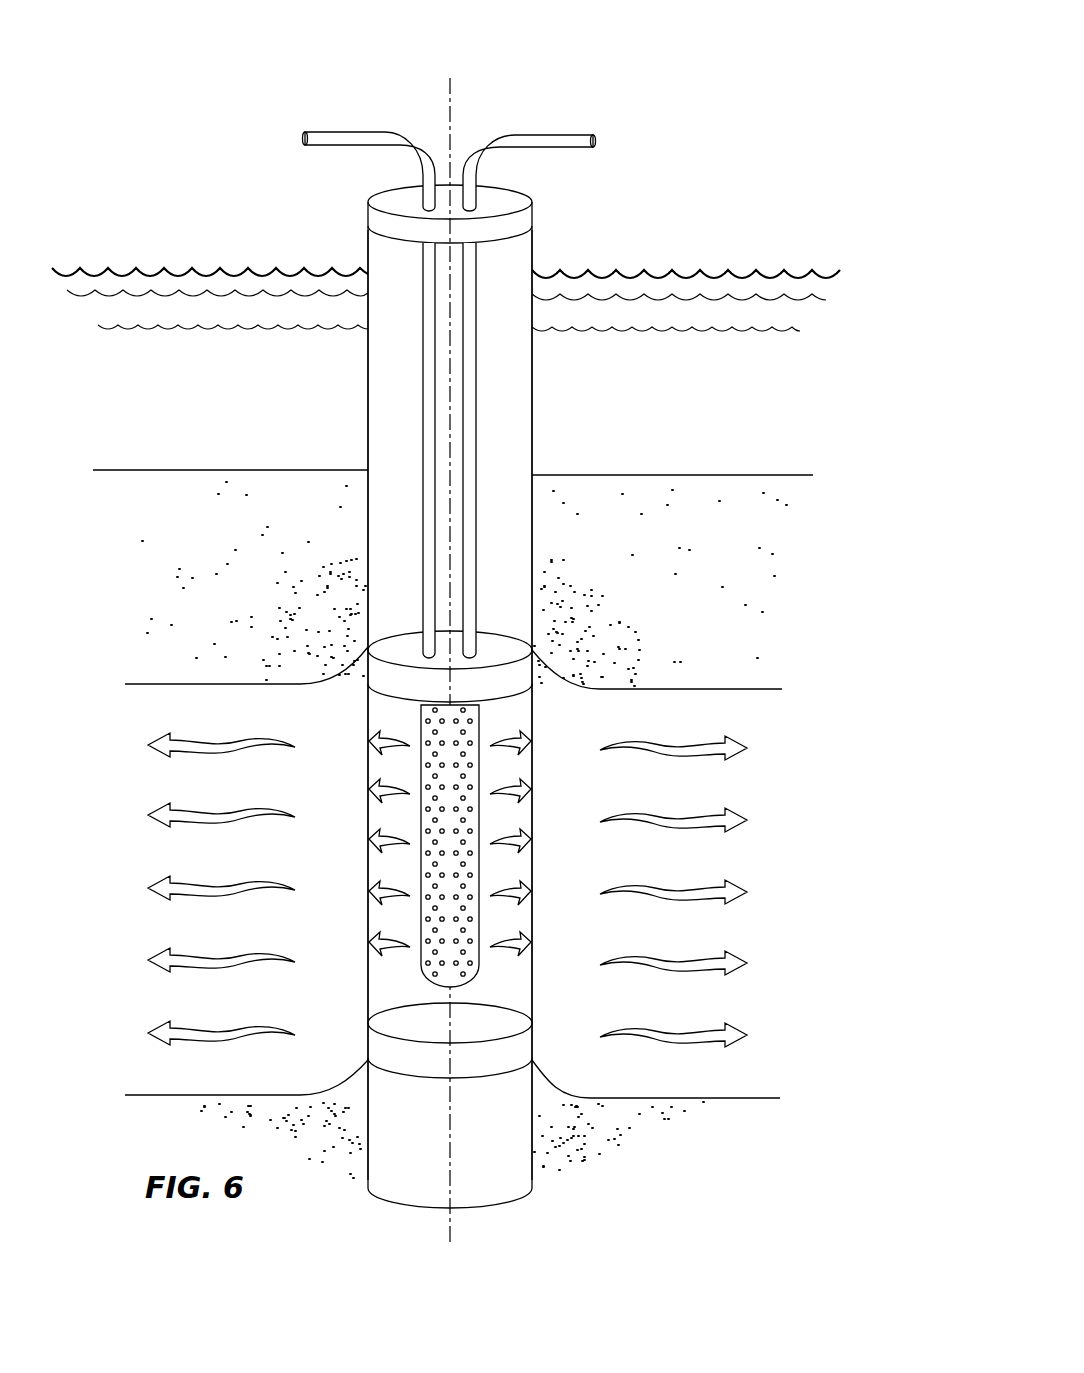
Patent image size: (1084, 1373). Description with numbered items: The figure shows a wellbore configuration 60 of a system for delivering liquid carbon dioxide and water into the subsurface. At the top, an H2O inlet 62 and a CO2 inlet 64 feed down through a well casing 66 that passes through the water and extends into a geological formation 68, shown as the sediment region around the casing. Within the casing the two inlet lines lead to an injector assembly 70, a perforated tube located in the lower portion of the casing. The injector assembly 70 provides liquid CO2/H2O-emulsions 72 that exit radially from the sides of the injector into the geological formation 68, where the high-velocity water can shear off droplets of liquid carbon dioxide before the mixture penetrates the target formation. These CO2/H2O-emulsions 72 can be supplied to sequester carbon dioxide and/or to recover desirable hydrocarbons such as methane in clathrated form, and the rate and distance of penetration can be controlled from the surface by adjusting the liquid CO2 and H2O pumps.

The wellbore configuration 60 is at (643, 91).
The H2O inlet 62 is at (594, 142).
The CO2 inlet 64 is at (305, 140).
The well casing 66 is at (532, 450).
The geological formation 68 is at (729, 488).
The injector assembly 70 is at (472, 972).
The CO2/H2O-emulsions 72 is at (150, 815).